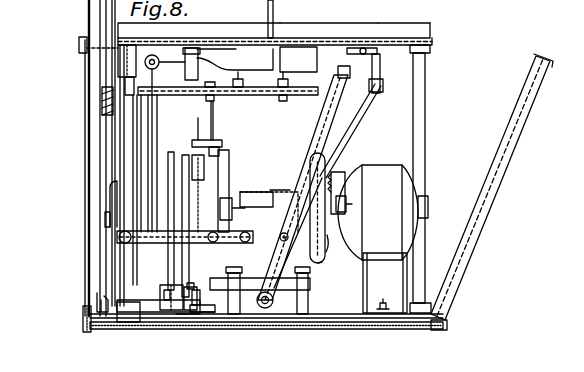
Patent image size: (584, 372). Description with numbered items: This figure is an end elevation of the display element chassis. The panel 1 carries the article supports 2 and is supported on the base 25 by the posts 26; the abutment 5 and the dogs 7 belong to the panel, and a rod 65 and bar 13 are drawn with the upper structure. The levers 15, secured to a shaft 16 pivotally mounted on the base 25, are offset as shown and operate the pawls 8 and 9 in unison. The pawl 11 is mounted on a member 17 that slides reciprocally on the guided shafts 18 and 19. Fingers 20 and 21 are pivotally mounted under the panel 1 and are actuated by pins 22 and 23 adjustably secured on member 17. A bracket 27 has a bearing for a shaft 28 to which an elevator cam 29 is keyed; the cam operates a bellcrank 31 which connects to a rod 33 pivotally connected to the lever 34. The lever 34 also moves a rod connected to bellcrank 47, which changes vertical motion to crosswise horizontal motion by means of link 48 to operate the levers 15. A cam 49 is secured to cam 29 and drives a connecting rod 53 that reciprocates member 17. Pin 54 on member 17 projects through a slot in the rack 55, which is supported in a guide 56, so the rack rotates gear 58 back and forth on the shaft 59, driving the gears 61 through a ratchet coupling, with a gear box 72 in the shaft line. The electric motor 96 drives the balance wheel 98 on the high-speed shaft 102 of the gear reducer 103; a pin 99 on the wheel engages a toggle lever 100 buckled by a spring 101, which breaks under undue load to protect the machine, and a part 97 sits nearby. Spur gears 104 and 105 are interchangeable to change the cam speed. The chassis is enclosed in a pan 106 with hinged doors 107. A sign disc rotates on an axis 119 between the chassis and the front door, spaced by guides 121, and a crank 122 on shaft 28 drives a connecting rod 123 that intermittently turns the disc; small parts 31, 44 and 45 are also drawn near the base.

The panel 1 is at (432, 40).
The article supports 2 is at (432, 27).
The abutment 5 is at (432, 46).
The dogs 7 is at (186, 62).
The pawl 8 is at (383, 86).
The pawl 9 is at (338, 72).
The pawl 11 is at (214, 57).
The beam section 13 is at (329, 32).
The levers 15 is at (329, 116).
The shaft 16 is at (265, 308).
The member 17 is at (270, 98).
The shaft 18 is at (404, 32).
The shaft 19 is at (156, 55).
The finger 20 is at (235, 60).
The finger 21 is at (298, 59).
The pin 22 is at (249, 82).
The pin 23 is at (294, 86).
The base 25 is at (310, 322).
The posts 26 is at (425, 98).
The bracket 27 is at (160, 190).
The shaft 28 is at (240, 191).
The elevator cam 29 is at (153, 124).
The bellcrank 31 is at (176, 322).
The rod 33 is at (172, 278).
The lever 34 is at (183, 158).
The arm 44 is at (175, 282).
The rod 45 is at (190, 156).
The bellcrank 47 is at (147, 306).
The link 48 is at (256, 233).
The cam 49 is at (137, 168).
The connecting rod 53 is at (108, 117).
The pin 54 is at (223, 120).
The rack 55 is at (215, 142).
The guide 56 is at (225, 152).
The gear 58 is at (201, 120).
The shaft 59 is at (210, 308).
The gears 61 is at (208, 316).
The rod 65 is at (268, 8).
The gear box 72 is at (198, 296).
The electric motor 96 is at (402, 166).
The arm 97 is at (327, 250).
The balance wheel 98 is at (322, 262).
The pin 99 is at (341, 168).
The toggle lever 100 is at (322, 230).
The spring 101 is at (349, 176).
The high-speed shaft 102 is at (352, 203).
The gear reducer 103 is at (279, 188).
The spur gear 104 is at (246, 207).
The spur gear 105 is at (229, 167).
The pan 106 is at (355, 332).
The doors 107 is at (458, 289).
The axis 119 is at (80, 50).
The guides 121 is at (96, 300).
The crank 122 is at (113, 200).
The connecting rod 123 is at (110, 174).